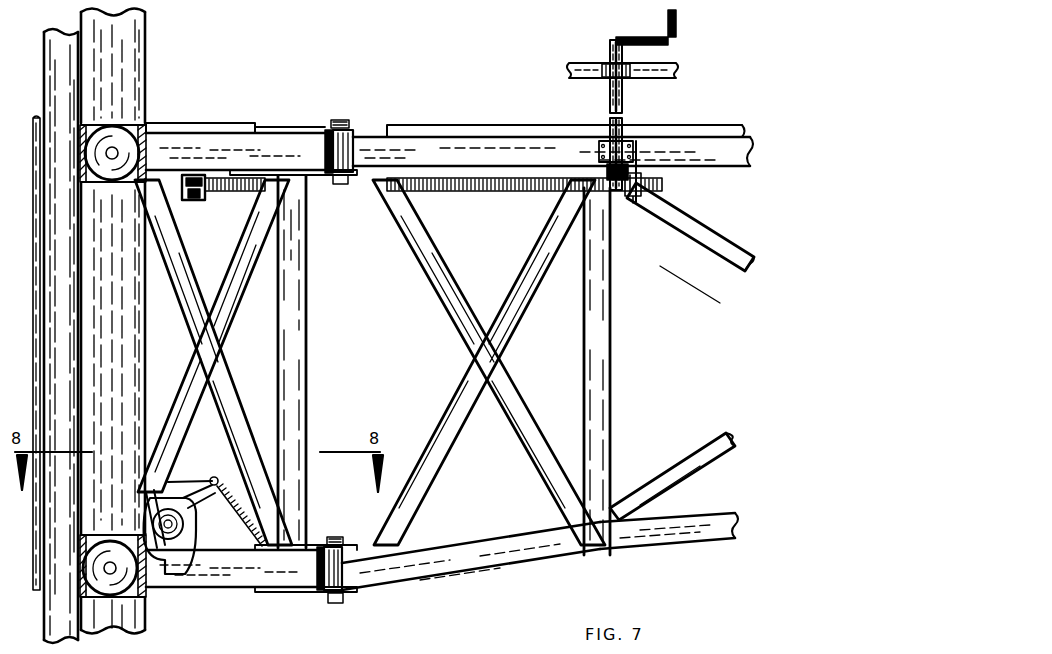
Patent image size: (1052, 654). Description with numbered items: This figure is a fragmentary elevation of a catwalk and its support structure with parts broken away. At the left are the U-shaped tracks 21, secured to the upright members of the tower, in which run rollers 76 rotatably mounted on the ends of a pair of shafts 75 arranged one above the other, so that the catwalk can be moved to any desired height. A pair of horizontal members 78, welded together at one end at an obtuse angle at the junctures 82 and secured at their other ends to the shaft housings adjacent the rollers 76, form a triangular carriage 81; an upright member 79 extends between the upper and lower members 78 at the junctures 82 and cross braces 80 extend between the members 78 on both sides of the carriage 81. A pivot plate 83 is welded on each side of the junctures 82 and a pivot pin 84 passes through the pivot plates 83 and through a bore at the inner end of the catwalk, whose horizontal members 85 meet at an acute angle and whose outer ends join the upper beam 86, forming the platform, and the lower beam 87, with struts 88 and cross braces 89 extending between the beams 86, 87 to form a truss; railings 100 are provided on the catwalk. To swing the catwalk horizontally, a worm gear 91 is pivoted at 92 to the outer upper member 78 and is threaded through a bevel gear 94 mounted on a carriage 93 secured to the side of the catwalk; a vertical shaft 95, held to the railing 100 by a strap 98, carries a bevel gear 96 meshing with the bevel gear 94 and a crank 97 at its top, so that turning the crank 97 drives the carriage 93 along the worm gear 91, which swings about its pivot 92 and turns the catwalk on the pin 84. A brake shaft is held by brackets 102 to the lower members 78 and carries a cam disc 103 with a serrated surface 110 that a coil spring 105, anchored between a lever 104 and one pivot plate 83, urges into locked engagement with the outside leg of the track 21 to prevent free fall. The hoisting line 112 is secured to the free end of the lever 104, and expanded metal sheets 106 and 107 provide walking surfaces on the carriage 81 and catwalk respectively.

The tracks 21 is at (130, 65).
The shafts 75 is at (117, 153).
The rollers 76 is at (100, 143).
The horizontal members 78 is at (220, 142).
The upright member 79 is at (308, 345).
The cross braces 80 is at (185, 382).
The triangular carriage 81 is at (309, 290).
The junctures 82 is at (306, 141).
The pivot plates 83 is at (270, 128).
The pivot pin 84 is at (348, 120).
The horizontal members 85 is at (482, 136).
The upper beam 86 is at (736, 167).
The lower beam 87 is at (706, 542).
The struts 88 is at (611, 385).
The cross braces 89 is at (528, 316).
The worm gear 91 is at (232, 191).
The pivot 92 is at (196, 200).
The carriage 93 is at (637, 152).
The bevel gear 94 is at (632, 204).
The vertical shaft 95 is at (623, 120).
The bevel gear 96 is at (606, 173).
The crank 97 is at (677, 25).
The strap 98 is at (603, 66).
The railings 100 is at (678, 69).
The brackets 102 is at (187, 567).
The cam disc 103 is at (178, 539).
The lever 104 is at (204, 500).
The coil spring 105 is at (248, 540).
The expanded metal sheet 106 is at (170, 123).
The expanded metal sheet 107 is at (708, 131).
The serrated surface 110 is at (156, 550).
The line 112 is at (208, 478).